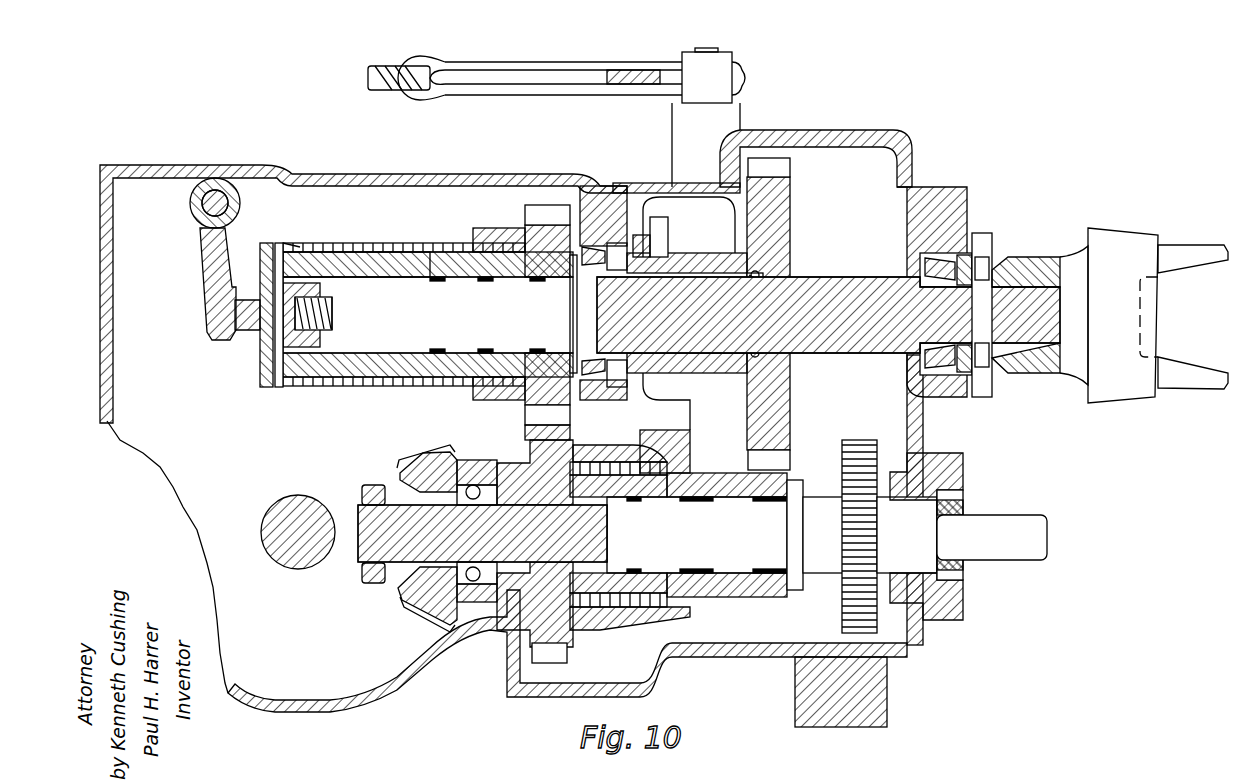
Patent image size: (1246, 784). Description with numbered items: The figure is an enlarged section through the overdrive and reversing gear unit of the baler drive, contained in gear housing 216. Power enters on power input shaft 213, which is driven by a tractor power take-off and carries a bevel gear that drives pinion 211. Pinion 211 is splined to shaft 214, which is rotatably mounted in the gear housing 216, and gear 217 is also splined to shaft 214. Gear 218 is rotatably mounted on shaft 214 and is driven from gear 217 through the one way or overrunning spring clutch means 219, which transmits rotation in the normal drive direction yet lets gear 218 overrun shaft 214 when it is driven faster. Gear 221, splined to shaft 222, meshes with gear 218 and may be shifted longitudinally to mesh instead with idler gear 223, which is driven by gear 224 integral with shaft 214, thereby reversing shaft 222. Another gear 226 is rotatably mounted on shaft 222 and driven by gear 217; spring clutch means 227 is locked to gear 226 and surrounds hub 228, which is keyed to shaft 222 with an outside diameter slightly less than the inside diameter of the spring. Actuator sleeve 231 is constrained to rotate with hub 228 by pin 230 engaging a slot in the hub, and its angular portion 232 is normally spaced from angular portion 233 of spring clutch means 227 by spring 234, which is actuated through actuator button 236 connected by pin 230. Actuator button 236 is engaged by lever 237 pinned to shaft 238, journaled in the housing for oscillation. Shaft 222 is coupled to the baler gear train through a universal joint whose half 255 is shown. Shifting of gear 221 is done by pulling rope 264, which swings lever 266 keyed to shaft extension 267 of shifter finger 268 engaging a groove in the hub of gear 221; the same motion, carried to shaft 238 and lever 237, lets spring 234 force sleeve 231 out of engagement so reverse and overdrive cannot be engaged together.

The pinion 211 is at (415, 607).
The power input shaft 213 is at (300, 570).
The shaft 214 is at (360, 510).
The gear housing 216 is at (432, 648).
The gear 217 is at (567, 655).
The gear 218 is at (760, 608).
The one way or overrunning spring clutch means 219 is at (617, 610).
The gear 221 is at (747, 417).
The shaft 222 is at (826, 355).
The idler gear 223 is at (853, 440).
The gear 224 is at (877, 534).
The gear 226 is at (527, 213).
The spring clutch means 227 is at (405, 247).
The hub 228 is at (392, 281).
The pin 230 is at (268, 243).
The actuator sleeve 231 is at (292, 386).
The angular portion 232 is at (296, 256).
The angular portion 233 is at (300, 246).
The spring 234 is at (332, 315).
The actuator button 236 is at (245, 331).
The lever 237 is at (207, 320).
The shaft 238 is at (207, 218).
The half of universal joint 255 is at (1128, 398).
The rope 264 is at (390, 66).
The lever 266 is at (542, 93).
The shaft extension 267 is at (706, 50).
The shifter finger 268 is at (668, 240).